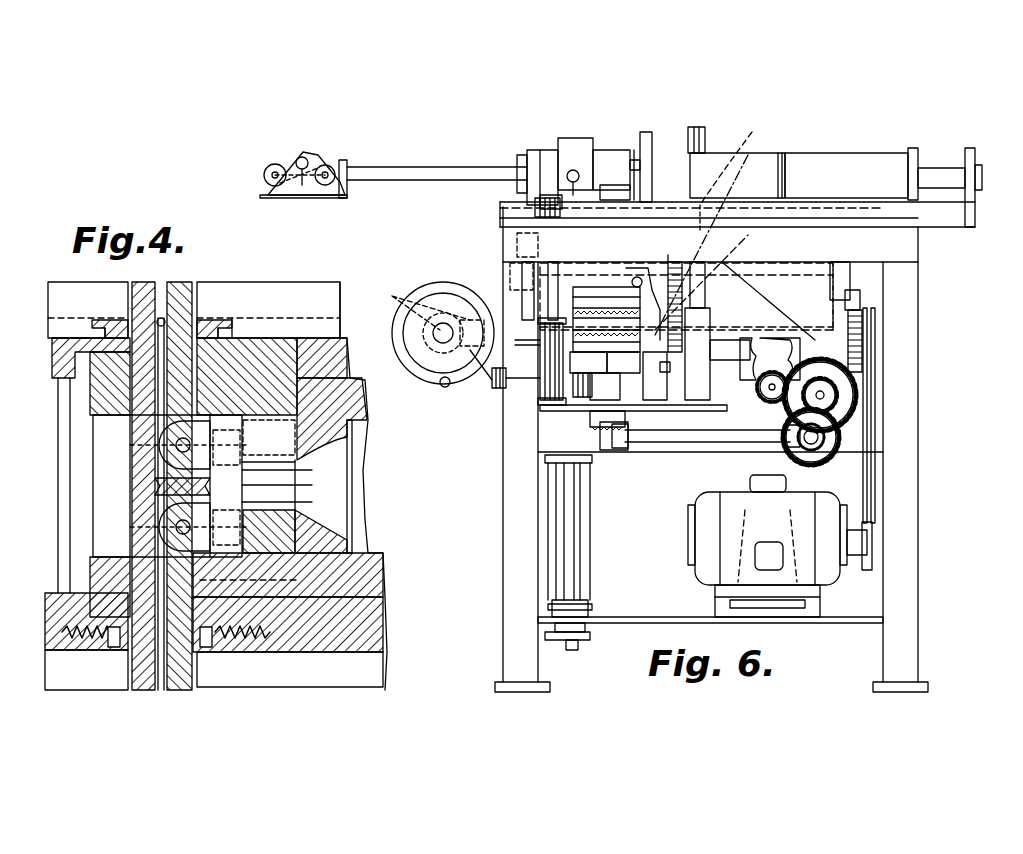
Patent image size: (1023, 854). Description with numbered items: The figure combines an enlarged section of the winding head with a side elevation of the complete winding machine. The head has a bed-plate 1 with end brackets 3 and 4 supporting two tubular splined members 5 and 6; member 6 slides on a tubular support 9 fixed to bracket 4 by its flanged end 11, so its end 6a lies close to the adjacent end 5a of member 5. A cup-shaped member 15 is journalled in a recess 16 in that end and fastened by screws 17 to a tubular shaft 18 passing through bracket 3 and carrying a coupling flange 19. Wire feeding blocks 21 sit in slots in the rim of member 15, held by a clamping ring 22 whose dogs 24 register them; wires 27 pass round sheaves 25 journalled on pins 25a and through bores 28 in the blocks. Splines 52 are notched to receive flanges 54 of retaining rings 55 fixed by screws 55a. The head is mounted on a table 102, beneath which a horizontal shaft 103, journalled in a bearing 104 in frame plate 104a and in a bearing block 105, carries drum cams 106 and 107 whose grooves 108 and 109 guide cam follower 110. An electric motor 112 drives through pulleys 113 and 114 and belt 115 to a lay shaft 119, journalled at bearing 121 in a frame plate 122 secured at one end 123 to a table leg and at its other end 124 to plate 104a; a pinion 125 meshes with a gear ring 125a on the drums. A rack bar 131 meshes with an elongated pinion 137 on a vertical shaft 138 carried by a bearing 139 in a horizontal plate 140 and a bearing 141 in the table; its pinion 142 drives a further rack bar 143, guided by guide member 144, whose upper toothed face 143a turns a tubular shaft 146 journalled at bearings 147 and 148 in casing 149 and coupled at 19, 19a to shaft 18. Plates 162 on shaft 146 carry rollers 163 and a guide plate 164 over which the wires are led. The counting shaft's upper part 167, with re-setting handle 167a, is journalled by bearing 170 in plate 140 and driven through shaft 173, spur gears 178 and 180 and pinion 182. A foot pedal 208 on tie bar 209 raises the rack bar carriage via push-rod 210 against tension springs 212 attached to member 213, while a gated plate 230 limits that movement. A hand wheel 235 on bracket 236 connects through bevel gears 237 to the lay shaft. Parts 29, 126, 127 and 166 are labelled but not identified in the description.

In FIG. 6, the bed-plate 1 is at (905, 222).
In FIG. 6, the bracket 3 is at (698, 130).
In FIG. 6, the bracket 4 is at (970, 148).
In FIG. 4, the splined member 5 is at (330, 350).
In FIG. 6, the splined member 5 is at (728, 160).
In FIG. 4, the end of splined member 5a is at (235, 334).
In FIG. 4, the splined member 6 is at (55, 350).
In FIG. 6, the splined member 6 is at (848, 160).
In FIG. 4, the end of splined member 6a is at (90, 330).
In FIG. 6, the tubular support 9 is at (932, 168).
In FIG. 6, the flanged end 11 is at (982, 170).
In FIG. 4, the cup-shaped member 15 is at (275, 552).
In FIG. 4, the recess 16 is at (270, 338).
In FIG. 4, the screws 17 is at (380, 586).
In FIG. 4, the tubular shaft 18 is at (362, 430).
In FIG. 6, the coupling flange 19 is at (640, 166).
In FIG. 6, the coupling 19a is at (615, 188).
In FIG. 4, the wire feeding blocks 21 is at (185, 290).
In FIG. 6, the wire feeding blocks 21 is at (785, 156).
In FIG. 4, the clamping ring 22 is at (88, 402).
In FIG. 4, the dogs 24 is at (128, 392).
In FIG. 4, the pulleys or sheaves 25 is at (175, 516).
In FIG. 4, the pins 25a is at (176, 446).
In FIG. 4, the wires 27 is at (312, 502).
In FIG. 4, the bores 28 is at (160, 290).
In FIG. 6, the cam path 29 is at (740, 168).
In FIG. 4, the splines 52 is at (62, 290).
In FIG. 4, the flanges 54 is at (100, 326).
In FIG. 4, the retaining rings 55 is at (112, 326).
In FIG. 4, the screws 55a is at (70, 648).
In FIG. 6, the table 102 is at (918, 252).
In FIG. 6, the horizontal shaft 103 is at (570, 290).
In FIG. 6, the bearing 104 is at (850, 282).
In FIG. 6, the frame plate 104a is at (860, 304).
In FIG. 6, the bearing block 105 is at (508, 272).
In FIG. 6, the drum cam 106 is at (804, 263).
In FIG. 6, the drum cam 107 is at (668, 255).
In FIG. 6, the cam groove 108 is at (772, 275).
In FIG. 6, the cam groove 109 is at (622, 272).
In FIG. 6, the cam-follower 110 is at (712, 245).
In FIG. 6, the electric motor 112 is at (767, 546).
In FIG. 6, the pulley 113 is at (872, 548).
In FIG. 6, the pulley 114 is at (870, 372).
In FIG. 6, the belt 115 is at (875, 472).
In FIG. 6, the lay shaft 119 is at (717, 331).
In FIG. 6, the bearing 121 is at (506, 385).
In FIG. 6, the frame plate 122 is at (762, 292).
In FIG. 6, the end of frame plate 123 is at (530, 456).
In FIG. 6, the end of frame plate 124 is at (845, 438).
In FIG. 6, the pinion 125 is at (682, 340).
In FIG. 6, the gear ring 125a is at (708, 280).
In FIG. 6, the arm 126 is at (665, 330).
In FIG. 6, the rack 127 is at (682, 300).
In FIG. 6, the rack bar 131 is at (488, 392).
In FIG. 6, the elongated pinion 137 is at (545, 375).
In FIG. 6, the vertical shaft 138 is at (525, 268).
In FIG. 6, the bearing 139 is at (538, 400).
In FIG. 6, the horizontal plate 140 is at (727, 408).
In FIG. 6, the bearing 141 is at (515, 240).
In FIG. 6, the pinion 142 is at (533, 200).
In FIG. 6, the rack bar 143 is at (548, 196).
In FIG. 6, the upper toothed face 143a is at (575, 170).
In FIG. 6, the guide member 144 is at (565, 165).
In FIG. 6, the tubular shaft 146 is at (366, 167).
In FIG. 6, the bearing 147 is at (530, 160).
In FIG. 6, the bearing 148 is at (630, 160).
In FIG. 6, the casing 149 is at (545, 150).
In FIG. 6, the plates 162 is at (285, 160).
In FIG. 6, the rollers 163 is at (300, 156).
In FIG. 6, the guide plate 164 is at (268, 194).
In FIG. 6, the shelf 166 is at (710, 461).
In FIG. 6, the upper part of counting shaft 167 is at (552, 290).
In FIG. 6, the handle 167a is at (648, 134).
In FIG. 6, the bearing 170 is at (612, 405).
In FIG. 6, the shaft 173 is at (712, 442).
In FIG. 6, the spur gear 178 is at (822, 452).
In FIG. 6, the spur gear 180 is at (845, 398).
In FIG. 6, the pinion 182 is at (772, 372).
In FIG. 6, the foot pedal 208 is at (588, 606).
In FIG. 6, the tie bar 209 is at (622, 623).
In FIG. 6, the push-rod 210 is at (575, 650).
In FIG. 6, the tension springs 212 is at (590, 545).
In FIG. 6, the member 213 is at (585, 462).
In FIG. 6, the plate 230 is at (782, 350).
In FIG. 6, the hand wheel 235 is at (406, 360).
In FIG. 6, the bracket 236 is at (464, 350).
In FIG. 6, the bevel gears 237 is at (392, 292).